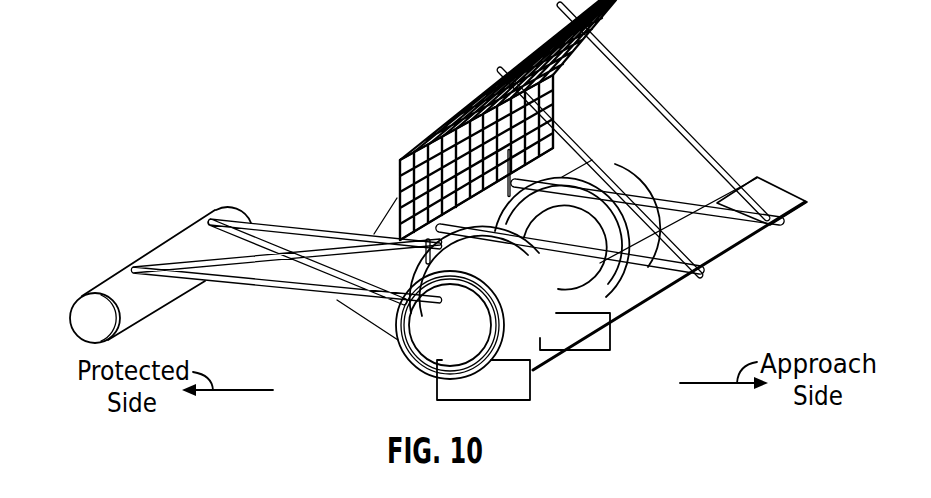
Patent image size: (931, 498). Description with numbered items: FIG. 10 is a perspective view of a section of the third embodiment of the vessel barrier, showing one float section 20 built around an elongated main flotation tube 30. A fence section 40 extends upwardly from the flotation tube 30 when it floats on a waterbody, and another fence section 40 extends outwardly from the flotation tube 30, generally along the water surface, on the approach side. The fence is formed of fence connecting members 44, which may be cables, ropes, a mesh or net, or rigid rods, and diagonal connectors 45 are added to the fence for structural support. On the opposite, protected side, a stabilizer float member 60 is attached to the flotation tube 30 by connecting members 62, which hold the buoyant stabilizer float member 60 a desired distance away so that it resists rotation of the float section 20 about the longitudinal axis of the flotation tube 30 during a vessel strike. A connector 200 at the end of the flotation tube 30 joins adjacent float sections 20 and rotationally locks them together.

The float section 20 is at (697, 98).
The main flotation tube 30 is at (588, 290).
The fence section 40 is at (398, 131).
The fence connecting members 44 is at (453, 104).
The diagonal connectors 45 is at (697, 147).
The stabilizer float member 60 is at (87, 317).
The connecting members 62 is at (277, 230).
The connectors 200 is at (413, 357).